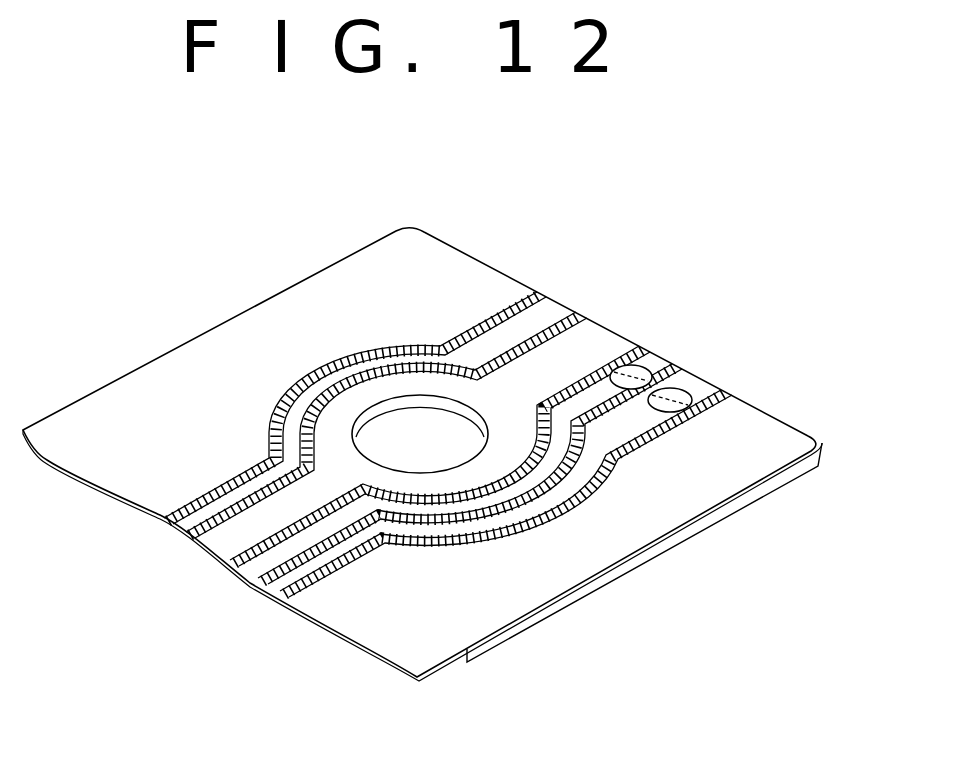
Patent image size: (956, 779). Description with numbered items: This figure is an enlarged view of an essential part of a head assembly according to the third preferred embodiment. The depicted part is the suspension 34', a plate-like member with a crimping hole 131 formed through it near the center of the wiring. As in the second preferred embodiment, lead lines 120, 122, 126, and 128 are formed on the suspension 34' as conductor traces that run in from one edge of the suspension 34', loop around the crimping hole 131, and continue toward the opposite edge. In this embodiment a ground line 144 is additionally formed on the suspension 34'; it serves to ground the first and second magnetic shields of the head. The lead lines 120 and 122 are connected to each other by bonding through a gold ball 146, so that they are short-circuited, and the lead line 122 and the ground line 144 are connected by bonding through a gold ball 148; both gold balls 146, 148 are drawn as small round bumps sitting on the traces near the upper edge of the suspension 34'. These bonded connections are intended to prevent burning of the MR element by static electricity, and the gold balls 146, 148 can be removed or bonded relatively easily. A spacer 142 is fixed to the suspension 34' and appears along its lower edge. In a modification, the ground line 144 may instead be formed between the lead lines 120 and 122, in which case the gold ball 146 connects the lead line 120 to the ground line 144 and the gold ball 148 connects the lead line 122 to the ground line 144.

The suspension 34' is at (422, 454).
The crimping hole 131 is at (400, 404).
The lead line 126 is at (213, 492).
The lead line 128 is at (197, 525).
The lead line 120 is at (227, 563).
The lead line 122 is at (263, 583).
The ground line 144 is at (333, 573).
The gold ball 146 is at (638, 366).
The gold ball 148 is at (692, 391).
The spacer 142 is at (612, 578).